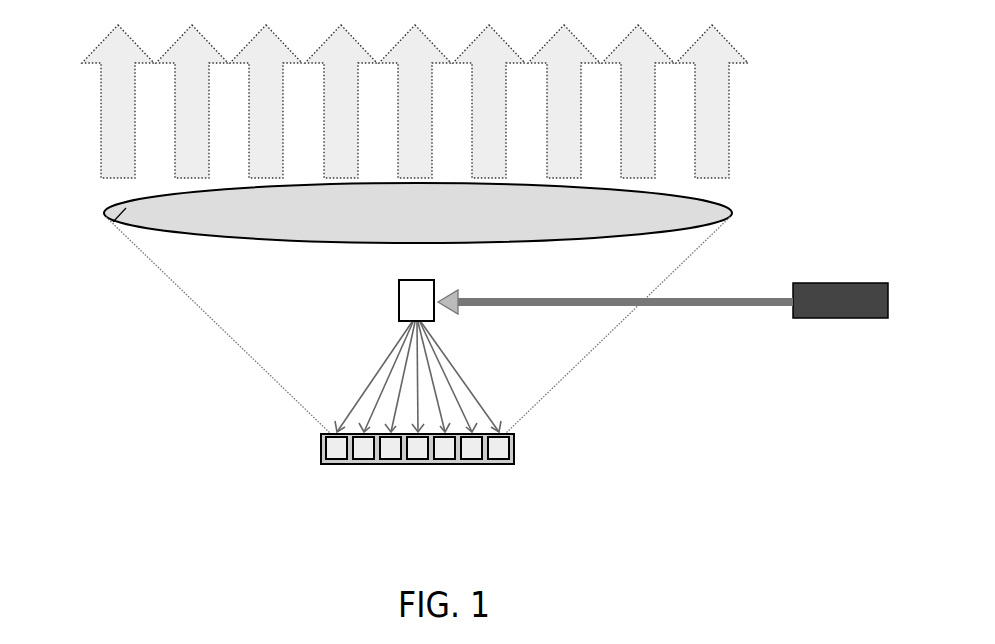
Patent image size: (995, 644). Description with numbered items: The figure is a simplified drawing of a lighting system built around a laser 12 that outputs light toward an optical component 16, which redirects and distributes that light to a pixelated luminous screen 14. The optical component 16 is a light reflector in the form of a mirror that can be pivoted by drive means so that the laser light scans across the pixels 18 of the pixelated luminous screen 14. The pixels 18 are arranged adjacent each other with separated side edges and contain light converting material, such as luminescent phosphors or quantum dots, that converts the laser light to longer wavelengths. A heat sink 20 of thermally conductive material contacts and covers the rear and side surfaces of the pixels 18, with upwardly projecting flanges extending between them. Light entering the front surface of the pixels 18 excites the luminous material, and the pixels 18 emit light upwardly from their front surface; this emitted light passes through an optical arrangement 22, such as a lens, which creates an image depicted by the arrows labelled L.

The emitted light arrows L is at (114, 78).
The laser 12 is at (785, 297).
The pixelated luminous screen 14 is at (384, 488).
The optical component 16 is at (409, 297).
The pixels 18 is at (517, 433).
The heat sink 20 is at (452, 465).
The optical arrangement 22 is at (107, 219).